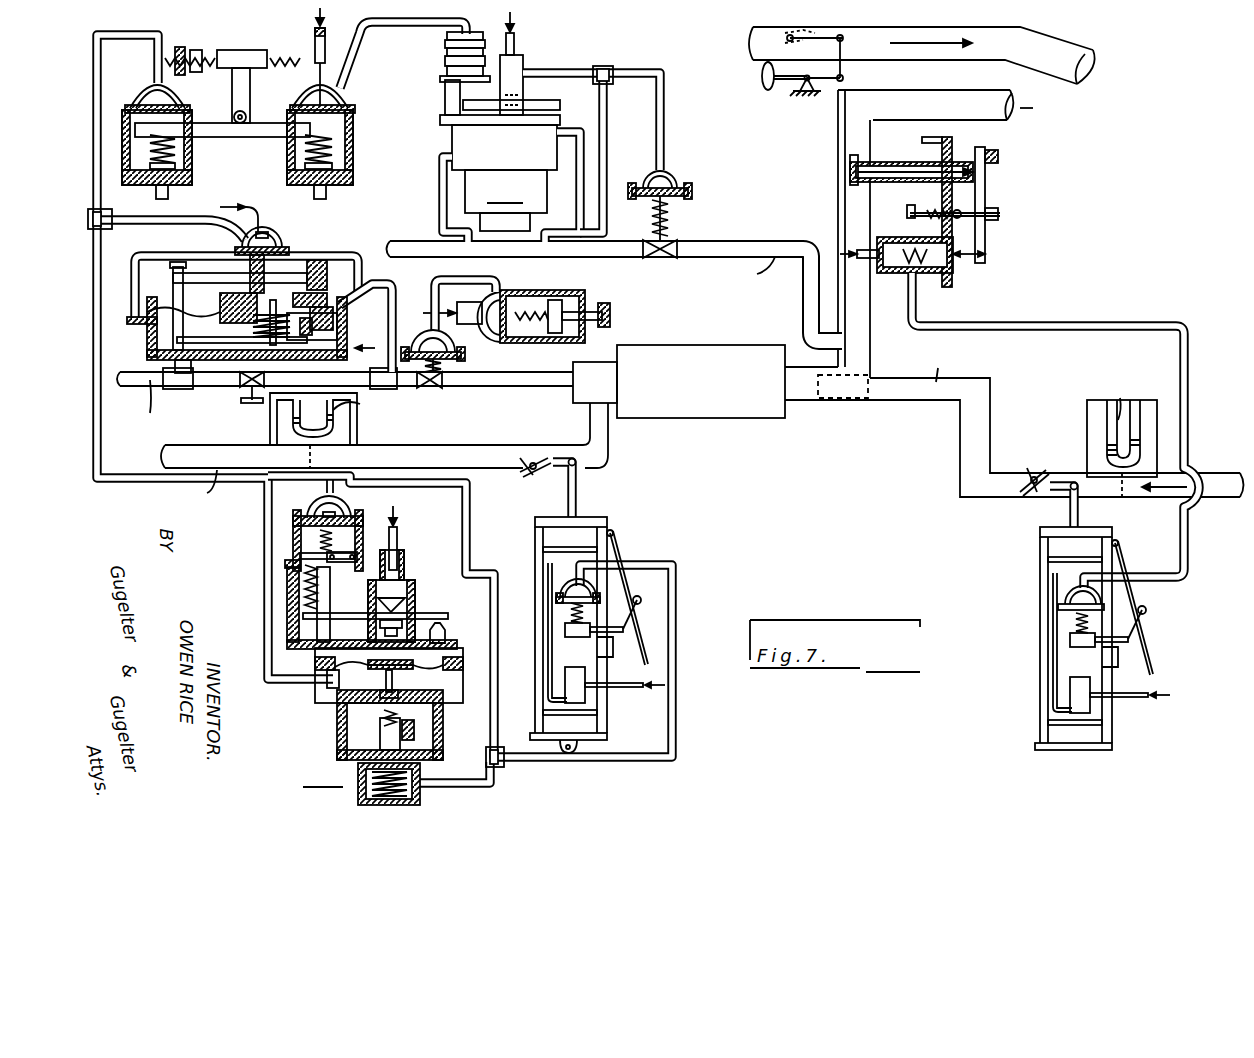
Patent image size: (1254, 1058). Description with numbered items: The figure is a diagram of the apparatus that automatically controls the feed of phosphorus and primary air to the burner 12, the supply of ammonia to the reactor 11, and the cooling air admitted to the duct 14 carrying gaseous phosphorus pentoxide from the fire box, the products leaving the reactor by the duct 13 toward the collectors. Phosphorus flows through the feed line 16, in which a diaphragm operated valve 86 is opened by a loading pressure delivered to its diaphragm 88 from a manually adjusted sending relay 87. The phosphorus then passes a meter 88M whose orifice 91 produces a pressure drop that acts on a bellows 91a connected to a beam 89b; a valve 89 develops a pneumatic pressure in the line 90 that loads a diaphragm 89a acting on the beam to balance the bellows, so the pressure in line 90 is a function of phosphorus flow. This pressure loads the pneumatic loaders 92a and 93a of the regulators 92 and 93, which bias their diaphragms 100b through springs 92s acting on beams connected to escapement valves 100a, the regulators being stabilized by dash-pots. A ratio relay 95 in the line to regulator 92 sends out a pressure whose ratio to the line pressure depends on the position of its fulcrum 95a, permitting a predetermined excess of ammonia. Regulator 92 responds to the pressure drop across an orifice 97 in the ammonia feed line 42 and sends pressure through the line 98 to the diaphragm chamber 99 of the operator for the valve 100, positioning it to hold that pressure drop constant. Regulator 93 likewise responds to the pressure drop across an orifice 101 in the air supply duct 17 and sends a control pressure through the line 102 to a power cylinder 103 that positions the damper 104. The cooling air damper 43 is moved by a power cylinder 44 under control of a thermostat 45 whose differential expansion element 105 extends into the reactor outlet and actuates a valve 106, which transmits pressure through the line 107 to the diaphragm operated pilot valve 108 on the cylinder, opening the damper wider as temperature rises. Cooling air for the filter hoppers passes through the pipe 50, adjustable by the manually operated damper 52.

The furnace/reaction chamber 11 is at (706, 390).
The burner 12 is at (606, 394).
The pipe to collectors 13 is at (838, 215).
The duct 14 is at (815, 405).
The phosphorus feed line 16 is at (497, 384).
The air supply duct 17 is at (464, 442).
The ammonia feed line 42 is at (627, 243).
The damper 43 is at (1049, 470).
The power cylinder 44 is at (1027, 643).
The thermostat 45 is at (1024, 196).
The cooling air pipe 50 is at (1085, 54).
The damper 52 is at (802, 63).
The diaphragm operated valve 86 is at (490, 360).
The sending relay 87 is at (585, 283).
The diaphragm 88 is at (440, 362).
The meter 88M is at (373, 250).
The valve 89 is at (263, 217).
The diaphragm 89a is at (282, 233).
The beam 89b is at (220, 272).
The line 90 is at (157, 34).
The orifice 91 is at (314, 332).
The bellows 91a is at (253, 326).
The regulator 92 is at (430, 117).
The pneumatic loader 92a is at (447, 50).
The spring 92s is at (320, 583).
The regulator 93 is at (447, 533).
The pneumatic loader 93a is at (352, 500).
The ratio relay 95 is at (252, 163).
The fulcrum 95a is at (246, 120).
The orifice 97 is at (508, 255).
The line 98 is at (642, 70).
The diaphragm chamber 99 is at (675, 183).
The valve 100 is at (673, 241).
The escapement valve 100a is at (518, 66).
The diaphragm 100b is at (333, 700).
The orifice 101 is at (345, 456).
The line 102 is at (546, 755).
The power cylinder 103 is at (672, 620).
The damper 104 is at (556, 433).
The differential expansion element 105 is at (913, 150).
The valve 106 is at (910, 228).
The line 107 is at (1030, 311).
The diaphragm operated pilot valve 108 is at (560, 590).